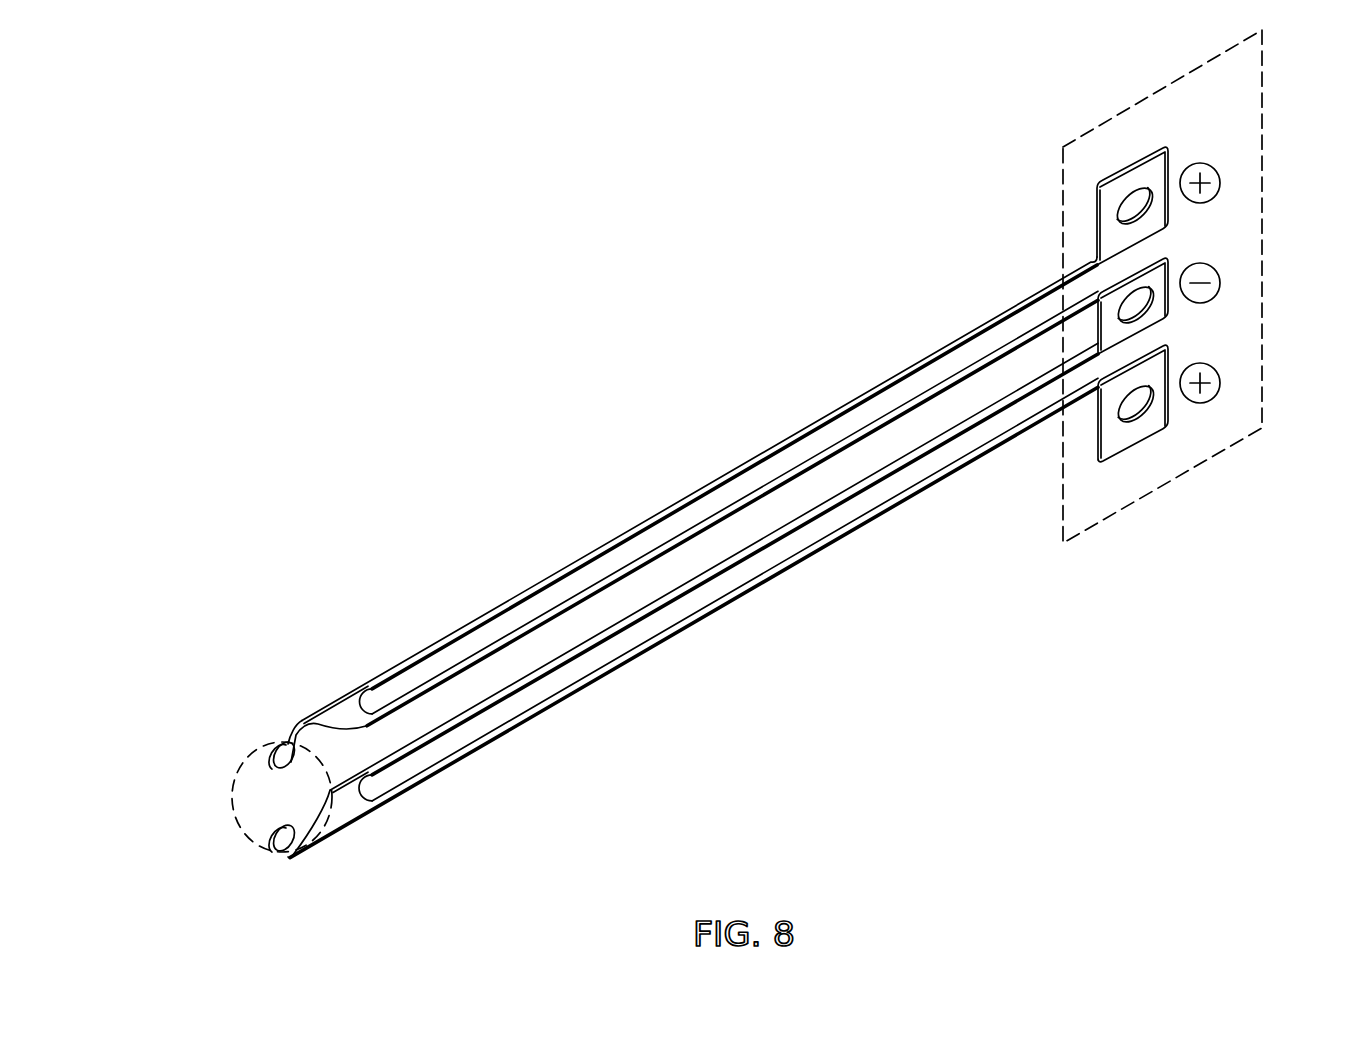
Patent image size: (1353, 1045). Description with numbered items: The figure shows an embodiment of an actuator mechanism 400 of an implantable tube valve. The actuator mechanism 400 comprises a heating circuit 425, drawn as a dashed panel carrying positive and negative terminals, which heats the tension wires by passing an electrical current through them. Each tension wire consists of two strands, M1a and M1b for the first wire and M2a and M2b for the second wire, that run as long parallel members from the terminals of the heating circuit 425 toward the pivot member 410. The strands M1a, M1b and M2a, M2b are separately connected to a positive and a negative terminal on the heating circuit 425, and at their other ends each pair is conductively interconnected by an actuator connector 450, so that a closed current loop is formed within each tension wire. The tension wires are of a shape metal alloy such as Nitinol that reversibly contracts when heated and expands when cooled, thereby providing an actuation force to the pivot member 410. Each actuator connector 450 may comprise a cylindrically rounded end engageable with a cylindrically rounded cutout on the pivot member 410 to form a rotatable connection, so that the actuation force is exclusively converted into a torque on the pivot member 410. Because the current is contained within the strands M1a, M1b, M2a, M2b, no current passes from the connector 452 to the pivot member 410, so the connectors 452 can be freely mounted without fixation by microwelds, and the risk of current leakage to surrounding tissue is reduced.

The actuator mechanism 400 is at (382, 538).
The pivot member 410 is at (240, 785).
The heating circuit 425 is at (1213, 457).
The actuator connector 450 is at (345, 712).
The connector 452 is at (263, 762).
The strand of tension wire M1 M1a is at (640, 524).
The strand of tension wire M1 M1b is at (767, 486).
The strand of tension wire M2 M2a is at (600, 676).
The strand of tension wire M2 M2b is at (697, 583).